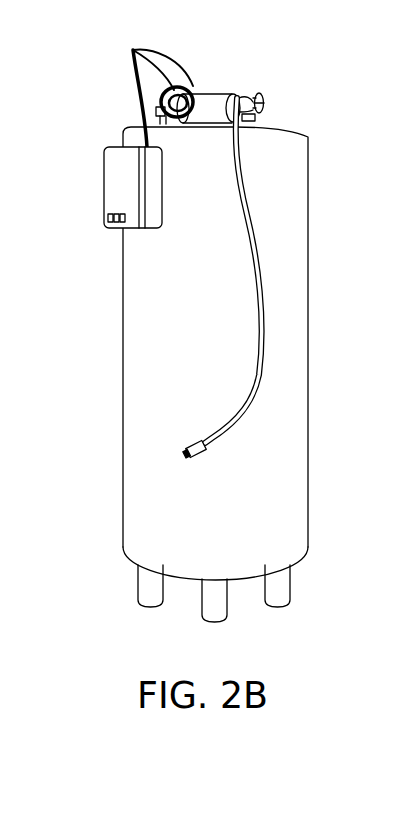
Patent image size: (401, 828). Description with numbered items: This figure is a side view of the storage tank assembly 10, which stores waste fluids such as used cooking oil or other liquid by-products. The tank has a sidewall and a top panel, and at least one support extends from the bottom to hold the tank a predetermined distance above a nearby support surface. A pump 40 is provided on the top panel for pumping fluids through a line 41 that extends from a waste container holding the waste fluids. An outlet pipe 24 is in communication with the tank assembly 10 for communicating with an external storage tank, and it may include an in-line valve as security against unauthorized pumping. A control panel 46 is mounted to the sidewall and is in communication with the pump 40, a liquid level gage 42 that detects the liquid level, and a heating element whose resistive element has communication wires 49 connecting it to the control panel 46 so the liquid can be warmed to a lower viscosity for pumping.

The storage tank assembly 10 is at (308, 410).
The outlet pipe 24 is at (263, 98).
The pump 40 is at (208, 93).
The line 41 is at (262, 270).
The liquid level gage 42 is at (155, 112).
The control panel 46 is at (118, 157).
The communication wires 49 is at (133, 50).